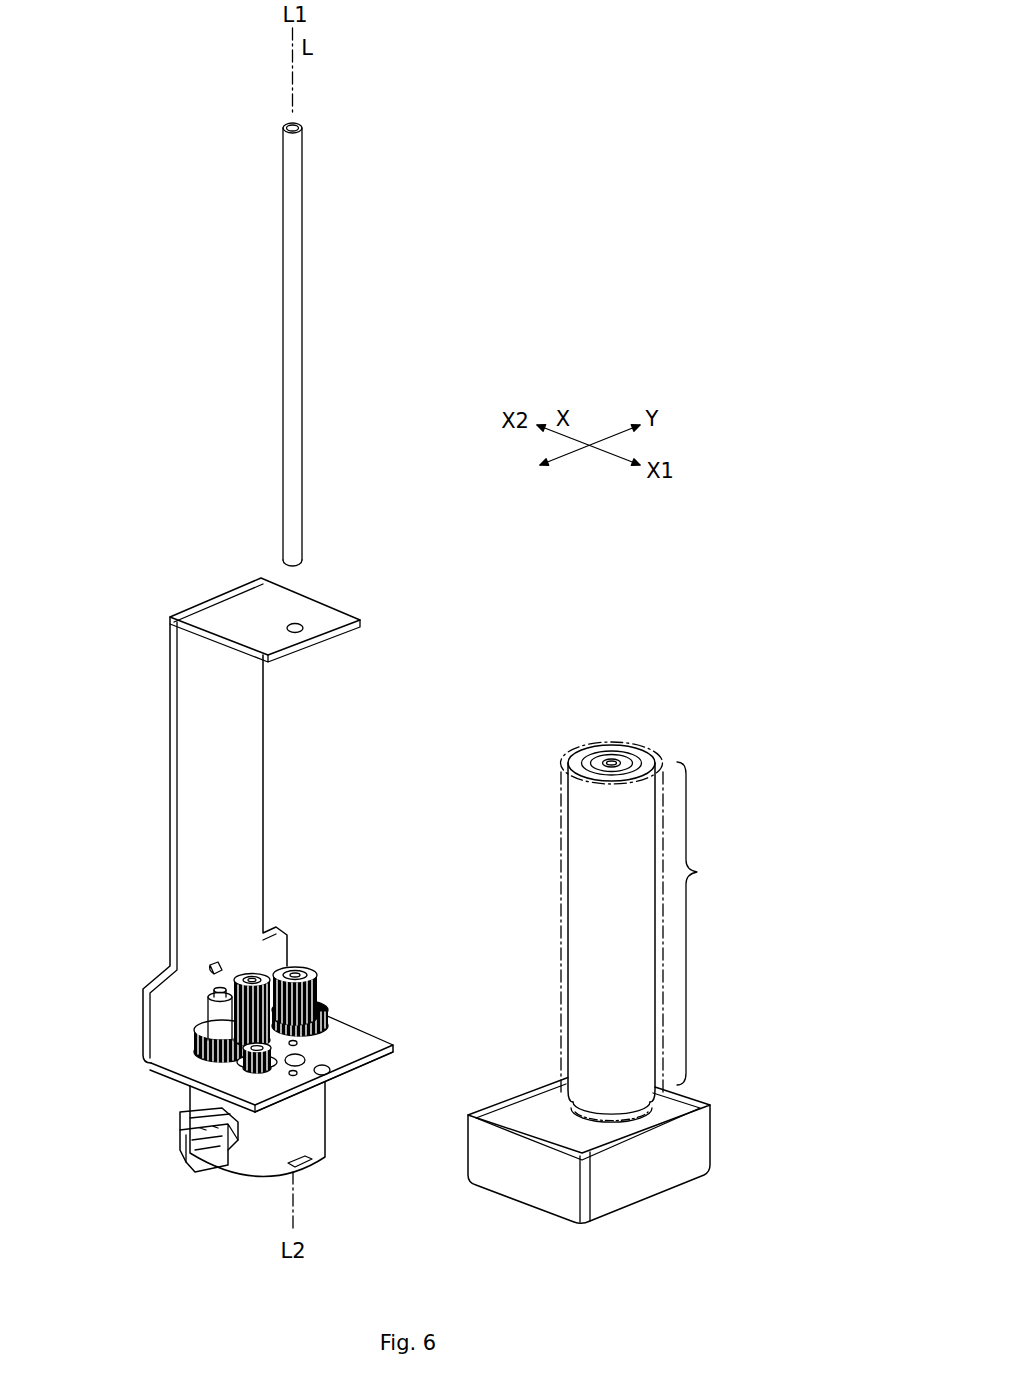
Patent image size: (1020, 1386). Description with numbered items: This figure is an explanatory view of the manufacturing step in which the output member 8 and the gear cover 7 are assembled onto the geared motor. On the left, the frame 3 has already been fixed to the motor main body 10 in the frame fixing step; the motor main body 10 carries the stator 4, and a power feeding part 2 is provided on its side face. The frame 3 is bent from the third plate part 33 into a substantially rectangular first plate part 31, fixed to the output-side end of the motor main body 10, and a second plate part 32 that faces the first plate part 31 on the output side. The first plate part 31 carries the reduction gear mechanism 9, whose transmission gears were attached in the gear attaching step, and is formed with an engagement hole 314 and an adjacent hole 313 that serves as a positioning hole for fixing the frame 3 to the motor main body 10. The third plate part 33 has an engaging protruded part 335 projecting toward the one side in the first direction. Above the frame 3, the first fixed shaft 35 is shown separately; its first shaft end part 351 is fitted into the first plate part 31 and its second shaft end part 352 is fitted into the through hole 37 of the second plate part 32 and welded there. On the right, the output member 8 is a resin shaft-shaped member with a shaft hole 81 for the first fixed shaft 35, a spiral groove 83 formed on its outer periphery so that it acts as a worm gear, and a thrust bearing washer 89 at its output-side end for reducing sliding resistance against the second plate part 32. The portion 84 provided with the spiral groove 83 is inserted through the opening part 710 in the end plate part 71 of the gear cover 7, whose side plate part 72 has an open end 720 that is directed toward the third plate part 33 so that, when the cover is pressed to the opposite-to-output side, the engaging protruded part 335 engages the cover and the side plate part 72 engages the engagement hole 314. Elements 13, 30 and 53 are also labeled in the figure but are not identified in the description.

The power feeding part 2 is at (200, 1166).
The frame 3 is at (277, 881).
The stator 4 is at (280, 1151).
The gear cover 7 is at (622, 1114).
The output member 8 is at (611, 895).
The reduction gear mechanism 9 is at (235, 1060).
The motor main body 10 is at (332, 1139).
The plate edge 13 is at (315, 1100).
The drive gear 30 is at (243, 1066).
The first plate part 31 is at (302, 1113).
The second plate part 32 is at (269, 597).
The third plate part 33 is at (198, 717).
The first fixed shaft 35 is at (331, 335).
The through hole 37 is at (300, 623).
The output gear 53 is at (263, 1053).
The end plate part 71 is at (589, 1114).
The side plate part 72 is at (675, 1172).
The shaft hole 81 is at (613, 760).
The spiral groove 83 is at (560, 843).
The portion provided with the spiral groove 84 is at (704, 923).
The thrust bearing washer 89 is at (628, 760).
The hole 313 is at (293, 1078).
The engagement hole 314 is at (324, 1068).
The engaging protruded part 335 is at (208, 970).
The first shaft end part 351 is at (302, 555).
The second shaft end part 352 is at (296, 140).
The opening part 710 is at (583, 1122).
The open end 720 is at (543, 1077).